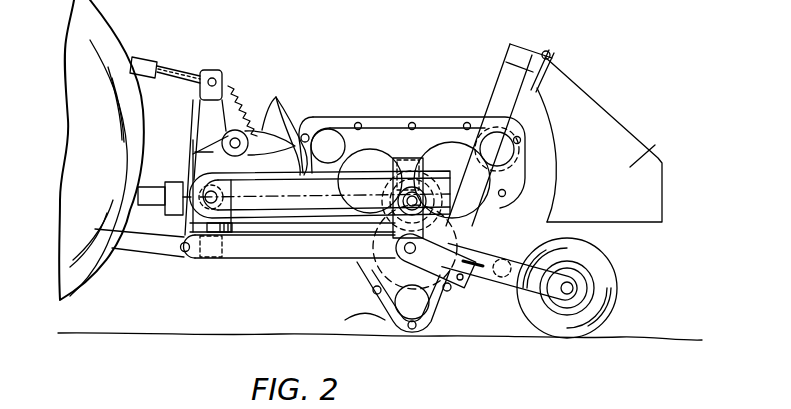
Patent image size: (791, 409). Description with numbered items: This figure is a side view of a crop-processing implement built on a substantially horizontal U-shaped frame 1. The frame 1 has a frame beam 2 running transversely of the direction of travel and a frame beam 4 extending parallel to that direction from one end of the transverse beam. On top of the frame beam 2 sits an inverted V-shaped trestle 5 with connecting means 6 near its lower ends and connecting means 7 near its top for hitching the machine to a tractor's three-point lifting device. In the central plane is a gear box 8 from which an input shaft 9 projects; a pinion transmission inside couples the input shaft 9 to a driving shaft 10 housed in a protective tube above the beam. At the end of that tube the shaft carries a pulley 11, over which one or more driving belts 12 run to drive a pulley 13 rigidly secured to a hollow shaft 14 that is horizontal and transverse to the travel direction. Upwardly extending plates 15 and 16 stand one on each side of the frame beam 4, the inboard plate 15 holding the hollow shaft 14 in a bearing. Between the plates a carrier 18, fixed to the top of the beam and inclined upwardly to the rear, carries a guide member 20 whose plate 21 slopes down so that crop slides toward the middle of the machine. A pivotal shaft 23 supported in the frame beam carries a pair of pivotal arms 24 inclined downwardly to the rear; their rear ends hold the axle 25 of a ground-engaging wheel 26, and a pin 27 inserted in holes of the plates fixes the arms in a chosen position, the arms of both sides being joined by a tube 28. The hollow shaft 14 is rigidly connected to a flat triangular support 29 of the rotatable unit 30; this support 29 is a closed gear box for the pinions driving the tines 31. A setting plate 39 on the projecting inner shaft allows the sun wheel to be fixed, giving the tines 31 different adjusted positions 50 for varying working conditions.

The frame 1 is at (220, 258).
The frame beam 2 is at (200, 258).
The frame beam 4 is at (248, 262).
The trestle 5 is at (197, 101).
The connecting means 6 is at (172, 252).
The connecting means 7 is at (211, 67).
The gear box 8 is at (174, 182).
The input shaft 9 is at (141, 182).
The driving shaft 10 is at (170, 205).
The pulley 11 is at (320, 201).
The driving belts 12 is at (325, 148).
The pulley 13 is at (393, 196).
The hollow shaft 14 is at (195, 152).
The plate 15 is at (224, 139).
The plate 16 is at (282, 108).
The carrier 18 is at (244, 105).
The guide member 20 is at (622, 125).
The plate 21 is at (646, 143).
The pivotal shaft 23 is at (404, 249).
The pivotal arms 24 is at (508, 286).
The axle 25 is at (575, 286).
The ground-engaging wheel 26 is at (616, 288).
The pin 27 is at (460, 281).
The tube 28 is at (503, 259).
The support 29 is at (378, 116).
The rotatable unit 30 is at (416, 98).
The tines 31 is at (320, 102).
The setting plate 39 is at (414, 158).
The adjusted positions 50 is at (593, 397).